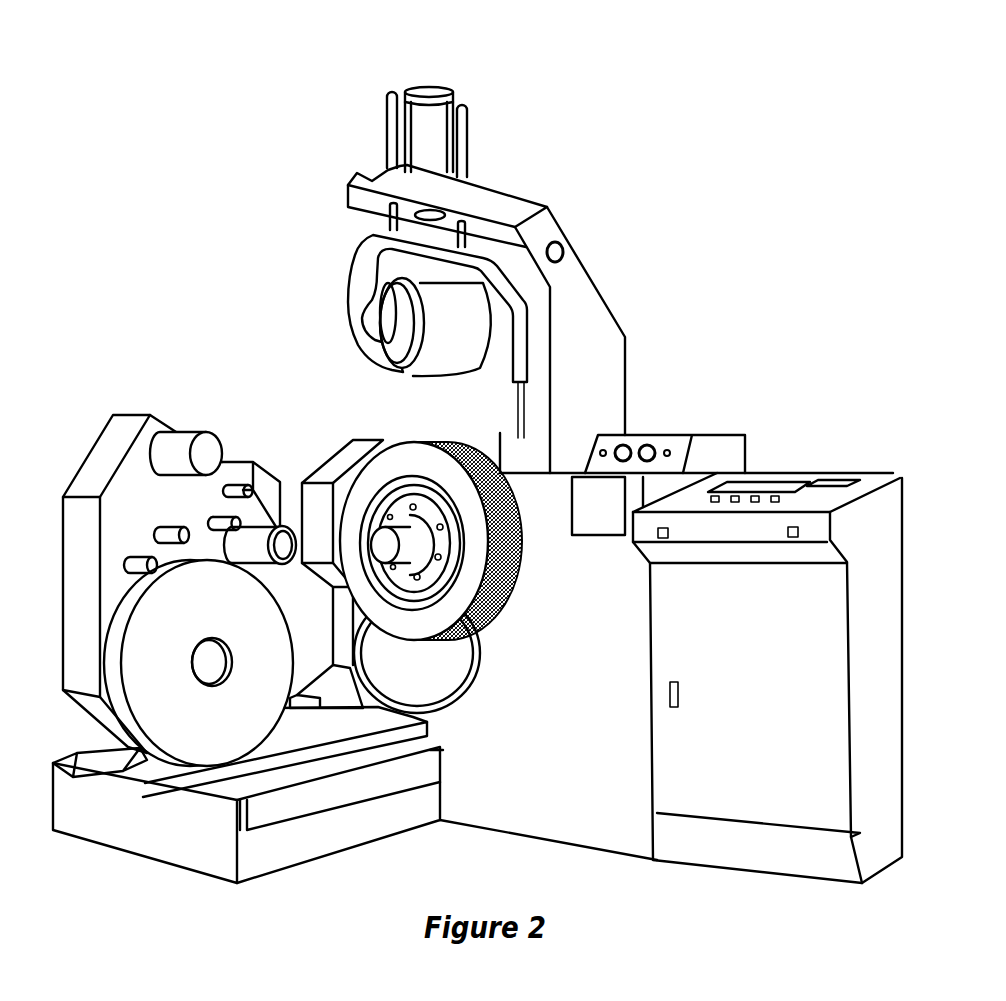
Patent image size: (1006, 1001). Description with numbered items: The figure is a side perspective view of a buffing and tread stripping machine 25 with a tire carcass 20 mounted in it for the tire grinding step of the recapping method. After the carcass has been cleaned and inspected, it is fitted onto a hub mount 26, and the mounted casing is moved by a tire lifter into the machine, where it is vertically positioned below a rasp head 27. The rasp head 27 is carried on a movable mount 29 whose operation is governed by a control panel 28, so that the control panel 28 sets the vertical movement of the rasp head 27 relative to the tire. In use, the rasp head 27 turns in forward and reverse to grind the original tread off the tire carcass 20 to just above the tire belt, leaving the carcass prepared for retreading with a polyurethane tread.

The tire carcass 20 is at (388, 500).
The buffing and tread stripping machine 25 is at (707, 323).
The hub mount 26 is at (372, 466).
The rasp head 27 is at (423, 368).
The control panel 28 is at (867, 460).
The movable mount 29 is at (492, 258).